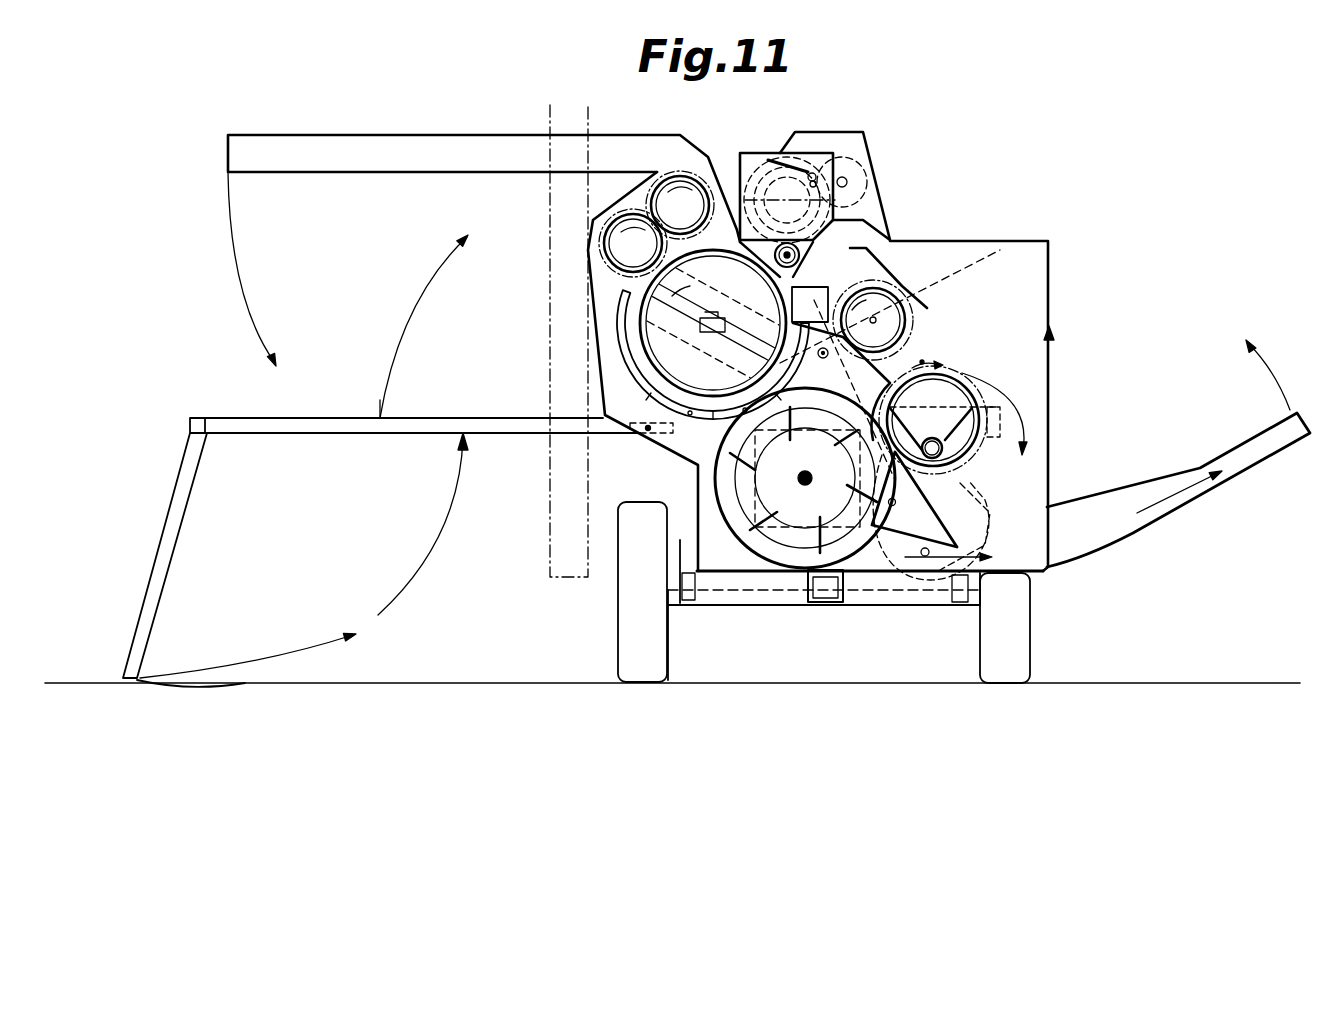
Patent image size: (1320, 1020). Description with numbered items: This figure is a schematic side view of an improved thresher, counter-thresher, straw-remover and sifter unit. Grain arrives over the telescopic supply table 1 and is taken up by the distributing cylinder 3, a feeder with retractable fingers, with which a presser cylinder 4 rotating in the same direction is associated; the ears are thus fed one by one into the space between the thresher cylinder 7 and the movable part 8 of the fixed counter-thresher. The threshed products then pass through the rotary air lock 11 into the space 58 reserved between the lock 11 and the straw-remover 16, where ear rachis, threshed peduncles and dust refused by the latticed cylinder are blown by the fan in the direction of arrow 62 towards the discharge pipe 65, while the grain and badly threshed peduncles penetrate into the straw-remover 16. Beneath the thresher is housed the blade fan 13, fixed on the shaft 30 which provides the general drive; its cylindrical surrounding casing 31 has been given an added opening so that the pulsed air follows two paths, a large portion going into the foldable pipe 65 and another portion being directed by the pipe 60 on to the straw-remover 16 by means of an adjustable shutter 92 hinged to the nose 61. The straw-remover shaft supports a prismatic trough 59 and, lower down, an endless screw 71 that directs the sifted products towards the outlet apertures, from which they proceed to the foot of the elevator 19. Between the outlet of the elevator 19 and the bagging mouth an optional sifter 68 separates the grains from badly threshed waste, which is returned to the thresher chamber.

The telescopic supply table 1 is at (386, 150).
The distributing cylinder 3 is at (680, 205).
The presser cylinder 4 is at (633, 243).
The thresher cylinder 7 is at (713, 323).
The movable part of the fixed counter-thresher 8 is at (717, 413).
The rotary air lock 11 is at (907, 322).
The blade fan 13 is at (805, 528).
The straw-remover 16 is at (965, 440).
The elevator 19 is at (953, 499).
The shaft of fan 30 is at (803, 474).
The cylindrical surrounding casing 31 is at (747, 543).
The space 58 is at (925, 352).
The prismatic trough 59 is at (939, 420).
The pipe 60 is at (880, 458).
The nose 61 is at (907, 513).
The arrow 62 is at (1000, 388).
The discharge pipe 65 is at (1115, 517).
The sifter 68 is at (758, 175).
The endless screw 71 is at (810, 292).
The adjustable shutter 92 is at (910, 477).